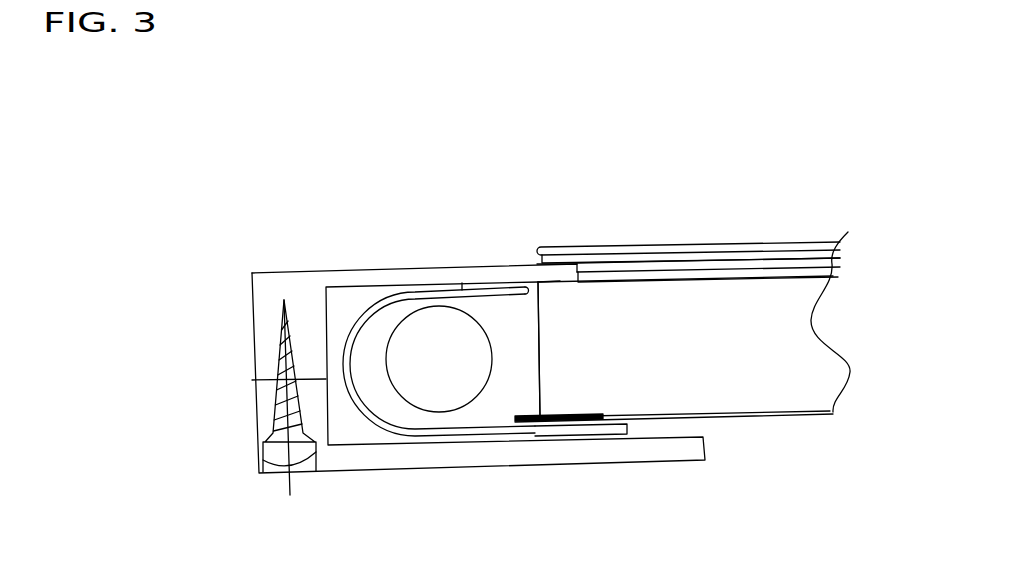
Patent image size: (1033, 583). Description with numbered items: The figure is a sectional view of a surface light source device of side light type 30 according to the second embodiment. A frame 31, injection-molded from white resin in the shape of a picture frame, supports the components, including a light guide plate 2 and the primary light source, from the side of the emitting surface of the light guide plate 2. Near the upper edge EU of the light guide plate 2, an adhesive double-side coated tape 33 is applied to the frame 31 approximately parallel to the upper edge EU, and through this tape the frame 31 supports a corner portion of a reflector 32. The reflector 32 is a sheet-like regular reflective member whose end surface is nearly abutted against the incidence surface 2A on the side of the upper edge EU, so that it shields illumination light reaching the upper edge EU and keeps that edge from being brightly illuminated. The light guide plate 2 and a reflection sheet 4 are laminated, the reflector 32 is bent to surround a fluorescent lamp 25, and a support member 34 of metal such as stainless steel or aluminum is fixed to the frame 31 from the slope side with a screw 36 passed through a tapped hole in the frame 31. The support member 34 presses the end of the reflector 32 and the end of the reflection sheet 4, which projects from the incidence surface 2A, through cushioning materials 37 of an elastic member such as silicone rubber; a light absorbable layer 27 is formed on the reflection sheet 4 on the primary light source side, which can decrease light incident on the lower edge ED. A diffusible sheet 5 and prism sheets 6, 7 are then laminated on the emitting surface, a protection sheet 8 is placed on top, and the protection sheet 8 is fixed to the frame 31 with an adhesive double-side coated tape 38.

The surface light source device of side light type 30 is at (292, 180).
The light guide plate 2 is at (733, 380).
The incidence surface 2A is at (541, 350).
The upper edge EU is at (540, 285).
The lower edge ED is at (543, 415).
The reflection sheet 4 is at (807, 417).
The diffusible sheet 5 is at (840, 268).
The prism sheet 6 is at (840, 259).
The prism sheet 7 is at (840, 251).
The protection sheet 8 is at (840, 242).
The fluorescent lamp 25 is at (440, 375).
The light absorbable layer 27 is at (523, 413).
The frame 31 is at (275, 288).
The reflector 32 is at (360, 317).
The adhesive double-side coated tape 33 is at (495, 291).
The support member 34 is at (380, 453).
The screw 36 is at (275, 455).
The cushioning material 37 is at (568, 433).
The adhesive double-side coated tape 38 is at (567, 253).